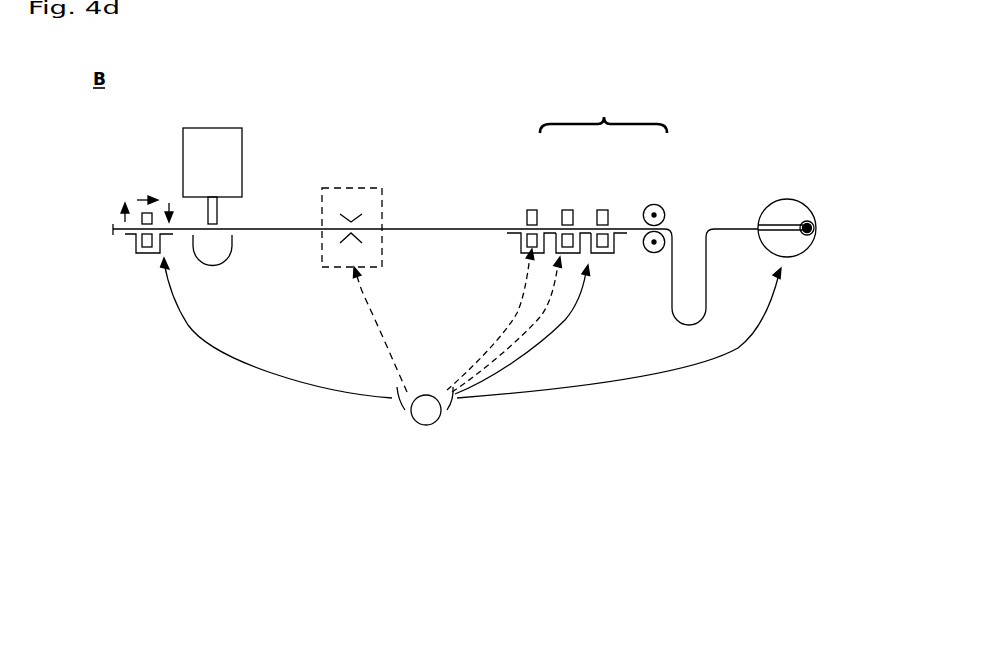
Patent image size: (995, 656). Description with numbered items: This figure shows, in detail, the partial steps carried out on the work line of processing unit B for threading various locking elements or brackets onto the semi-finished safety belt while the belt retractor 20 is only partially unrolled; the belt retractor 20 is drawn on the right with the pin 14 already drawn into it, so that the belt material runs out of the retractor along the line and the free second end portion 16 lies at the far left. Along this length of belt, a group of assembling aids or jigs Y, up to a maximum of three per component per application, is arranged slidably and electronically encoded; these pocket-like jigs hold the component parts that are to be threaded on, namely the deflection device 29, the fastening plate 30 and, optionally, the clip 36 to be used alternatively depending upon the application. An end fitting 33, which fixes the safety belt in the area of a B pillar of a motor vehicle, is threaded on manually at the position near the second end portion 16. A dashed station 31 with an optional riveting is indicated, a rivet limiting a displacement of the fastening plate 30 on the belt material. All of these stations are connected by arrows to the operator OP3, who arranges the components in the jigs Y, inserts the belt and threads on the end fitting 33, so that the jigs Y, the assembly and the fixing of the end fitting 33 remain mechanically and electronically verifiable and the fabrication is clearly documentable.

The pin 14 is at (812, 240).
The second end portion 16 is at (124, 246).
The belt retractor 20 is at (787, 200).
The deflection device 29 is at (603, 208).
The fastening plate 30 is at (568, 208).
The cutting unit 31 is at (357, 210).
The end fitting 33 is at (147, 212).
The clip 36 is at (532, 208).
The operator Op3 OP3 is at (420, 422).
The jigs Y is at (603, 111).